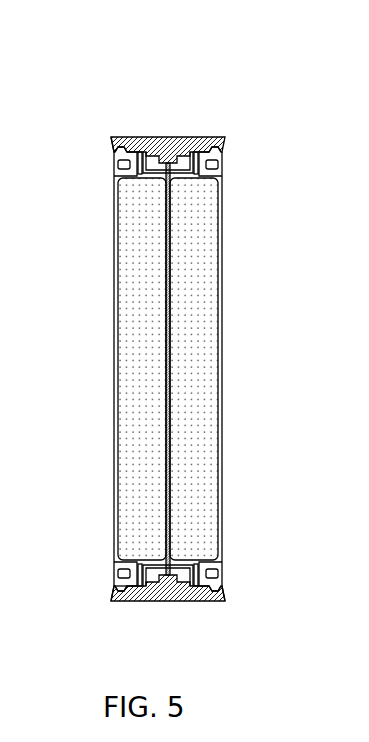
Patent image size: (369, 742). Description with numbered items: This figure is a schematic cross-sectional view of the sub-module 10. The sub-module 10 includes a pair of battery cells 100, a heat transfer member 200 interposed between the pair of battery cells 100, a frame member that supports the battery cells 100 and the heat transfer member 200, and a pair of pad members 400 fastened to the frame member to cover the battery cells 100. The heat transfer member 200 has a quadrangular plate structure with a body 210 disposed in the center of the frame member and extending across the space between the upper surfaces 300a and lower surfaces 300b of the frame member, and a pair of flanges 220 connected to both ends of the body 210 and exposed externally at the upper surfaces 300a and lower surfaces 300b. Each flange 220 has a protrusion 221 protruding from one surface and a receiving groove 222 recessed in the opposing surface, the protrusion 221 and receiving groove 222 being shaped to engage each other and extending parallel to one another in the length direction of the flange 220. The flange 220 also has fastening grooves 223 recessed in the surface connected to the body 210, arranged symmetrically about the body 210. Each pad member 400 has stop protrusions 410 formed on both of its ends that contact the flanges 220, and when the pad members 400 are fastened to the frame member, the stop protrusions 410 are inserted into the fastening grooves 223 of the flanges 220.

The sub-module 10 is at (182, 41).
The battery cell 100 is at (178, 458).
The heat transfer member 200 is at (136, 603).
The body 210 is at (167, 356).
The flange 220 is at (207, 137).
The protrusion 221 is at (113, 601).
The receiving groove 222 is at (221, 597).
The fastening groove 223 is at (119, 137).
The upper surface 300a is at (172, 160).
The lower surface 300b is at (182, 580).
The pad member 400 is at (118, 168).
The stop protrusion 410 is at (114, 153).